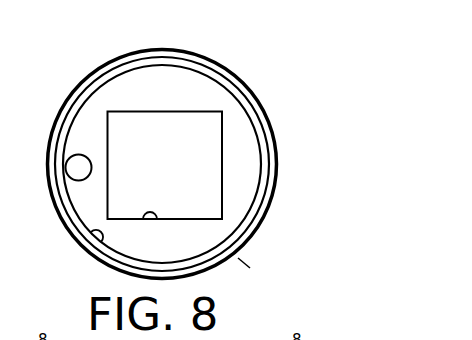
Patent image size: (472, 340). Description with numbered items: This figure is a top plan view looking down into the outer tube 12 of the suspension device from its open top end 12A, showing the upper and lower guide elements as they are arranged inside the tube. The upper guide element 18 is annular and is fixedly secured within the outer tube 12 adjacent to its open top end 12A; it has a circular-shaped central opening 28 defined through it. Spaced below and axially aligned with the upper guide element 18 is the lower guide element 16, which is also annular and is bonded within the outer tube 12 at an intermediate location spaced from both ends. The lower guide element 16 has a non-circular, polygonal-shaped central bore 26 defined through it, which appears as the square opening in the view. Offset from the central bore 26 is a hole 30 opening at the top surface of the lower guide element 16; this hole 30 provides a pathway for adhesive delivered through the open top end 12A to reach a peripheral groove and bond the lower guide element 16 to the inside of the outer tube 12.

The outer tube 12 is at (275, 133).
The open top end 12A is at (262, 273).
The lower guide element 16 is at (177, 83).
The upper guide element 18 is at (85, 98).
The central bore 26 is at (155, 214).
The central opening 28 is at (94, 237).
The hole 30 is at (78, 168).